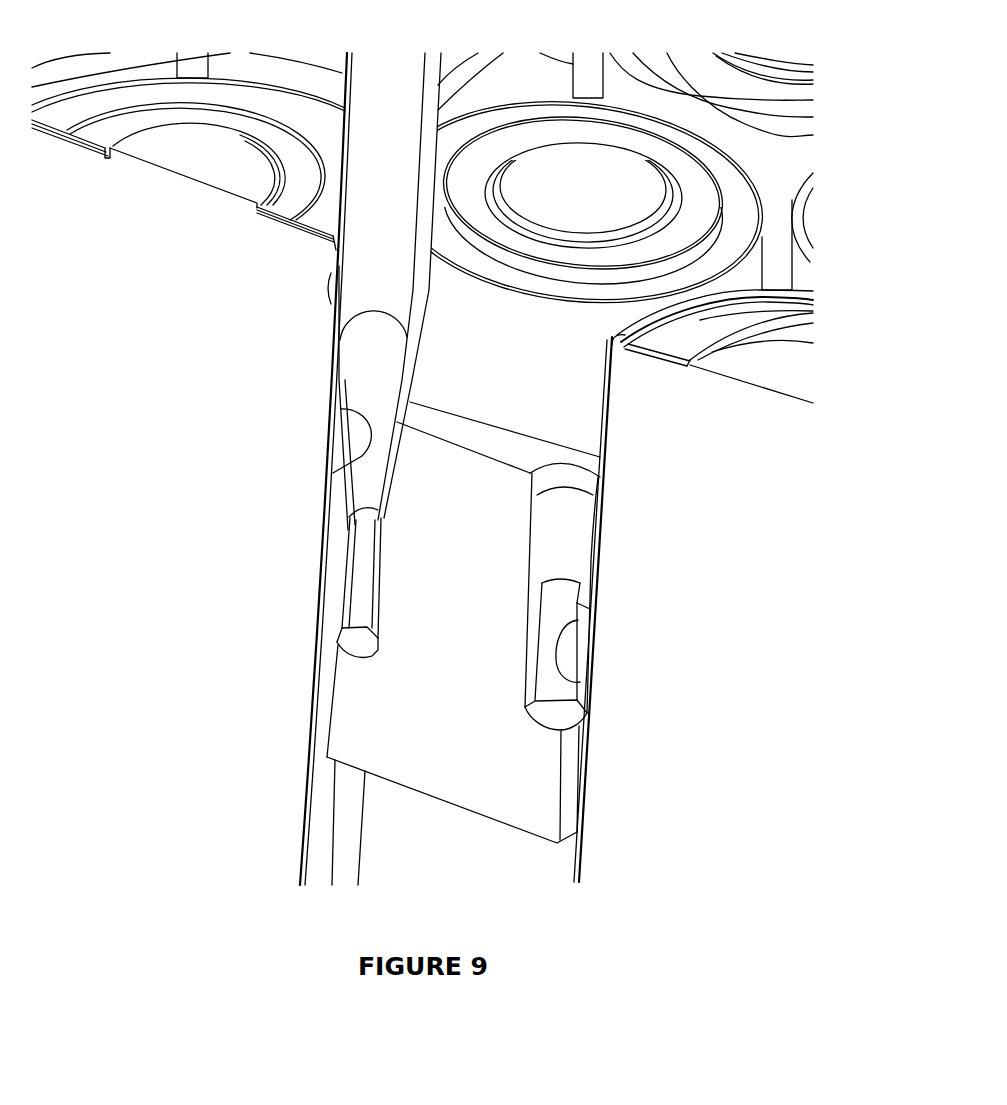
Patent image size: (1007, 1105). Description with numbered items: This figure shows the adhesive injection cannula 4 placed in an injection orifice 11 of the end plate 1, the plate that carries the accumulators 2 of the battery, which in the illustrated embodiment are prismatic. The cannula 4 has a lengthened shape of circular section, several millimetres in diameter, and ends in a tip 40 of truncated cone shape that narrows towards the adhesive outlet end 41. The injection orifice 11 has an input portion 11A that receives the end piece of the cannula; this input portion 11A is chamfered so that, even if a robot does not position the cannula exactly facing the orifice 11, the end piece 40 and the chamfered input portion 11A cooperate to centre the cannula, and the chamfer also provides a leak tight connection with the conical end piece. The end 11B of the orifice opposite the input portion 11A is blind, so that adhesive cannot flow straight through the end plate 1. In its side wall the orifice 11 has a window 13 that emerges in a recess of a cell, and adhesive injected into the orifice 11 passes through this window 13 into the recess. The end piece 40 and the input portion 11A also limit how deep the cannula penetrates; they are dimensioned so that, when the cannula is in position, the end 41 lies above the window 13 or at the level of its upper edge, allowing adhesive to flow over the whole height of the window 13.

The end plate 1 is at (372, 717).
The accumulator 2 is at (670, 157).
The cannula 4 is at (342, 160).
The injection orifice 11 is at (563, 478).
The input portion 11A is at (347, 460).
The end of the injection orifice 11B is at (360, 648).
The window 13 is at (577, 621).
The tip 40 is at (345, 377).
The adhesive outlet end 41 is at (367, 520).